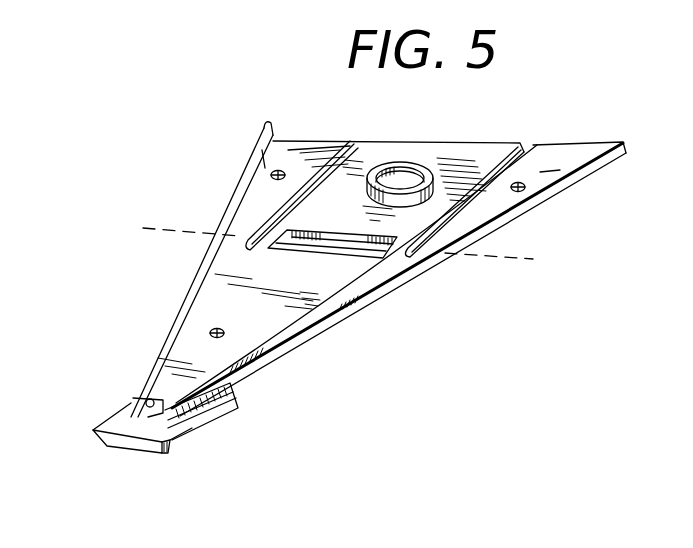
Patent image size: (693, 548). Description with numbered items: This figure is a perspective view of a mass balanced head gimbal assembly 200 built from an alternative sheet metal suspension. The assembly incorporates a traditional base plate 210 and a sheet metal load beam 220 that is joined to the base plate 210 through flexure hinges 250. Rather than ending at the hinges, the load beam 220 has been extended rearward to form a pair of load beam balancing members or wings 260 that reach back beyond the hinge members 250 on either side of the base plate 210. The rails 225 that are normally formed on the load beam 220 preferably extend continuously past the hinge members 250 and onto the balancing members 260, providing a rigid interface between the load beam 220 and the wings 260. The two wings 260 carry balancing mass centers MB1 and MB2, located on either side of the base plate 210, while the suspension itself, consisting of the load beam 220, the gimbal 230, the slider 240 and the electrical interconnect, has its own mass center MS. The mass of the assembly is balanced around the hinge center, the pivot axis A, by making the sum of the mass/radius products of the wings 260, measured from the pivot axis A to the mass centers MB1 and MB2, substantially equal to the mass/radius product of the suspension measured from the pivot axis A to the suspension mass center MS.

The head gimbal assembly 200 is at (545, 88).
The base plate 210 is at (452, 150).
The load beam 220 is at (258, 330).
The rails 225 is at (200, 268).
The gimbal 230 is at (105, 425).
The slider 240 is at (247, 411).
The flexure hinges 250 is at (278, 233).
The load beam balancing members 260 is at (263, 170).
The balancing mass center MB1 is at (521, 183).
The balancing mass center MB2 is at (280, 170).
The suspension mass center MS is at (227, 317).
The pivot axis A is at (361, 253).